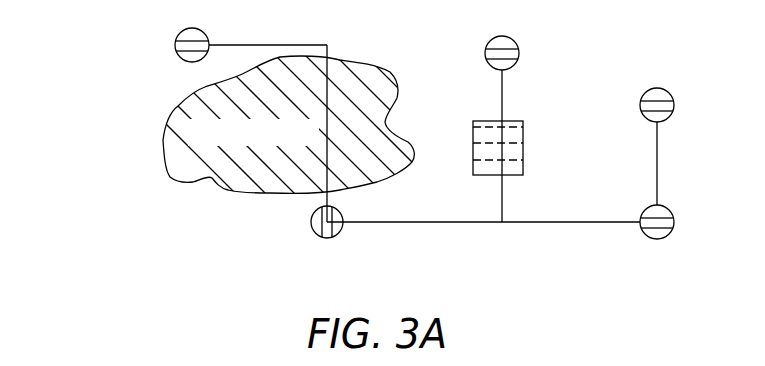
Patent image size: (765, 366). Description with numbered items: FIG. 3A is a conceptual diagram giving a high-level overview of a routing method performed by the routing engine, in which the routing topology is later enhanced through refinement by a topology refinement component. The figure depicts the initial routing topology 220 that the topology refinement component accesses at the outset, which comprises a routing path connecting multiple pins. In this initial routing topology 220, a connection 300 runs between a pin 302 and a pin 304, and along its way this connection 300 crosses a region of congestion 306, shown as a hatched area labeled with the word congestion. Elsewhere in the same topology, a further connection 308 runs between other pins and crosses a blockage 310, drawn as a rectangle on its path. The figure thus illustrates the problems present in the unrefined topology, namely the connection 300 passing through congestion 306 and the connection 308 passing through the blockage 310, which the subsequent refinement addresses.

The initial routing topology 220 is at (130, 74).
The connection 300 is at (327, 76).
The pin 302 is at (183, 40).
The pin 304 is at (314, 227).
The congestion 306 is at (163, 160).
The connection 308 is at (503, 95).
The blockage 310 is at (525, 150).